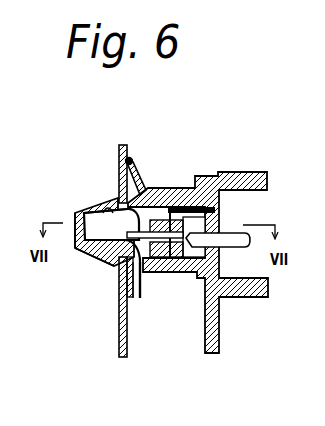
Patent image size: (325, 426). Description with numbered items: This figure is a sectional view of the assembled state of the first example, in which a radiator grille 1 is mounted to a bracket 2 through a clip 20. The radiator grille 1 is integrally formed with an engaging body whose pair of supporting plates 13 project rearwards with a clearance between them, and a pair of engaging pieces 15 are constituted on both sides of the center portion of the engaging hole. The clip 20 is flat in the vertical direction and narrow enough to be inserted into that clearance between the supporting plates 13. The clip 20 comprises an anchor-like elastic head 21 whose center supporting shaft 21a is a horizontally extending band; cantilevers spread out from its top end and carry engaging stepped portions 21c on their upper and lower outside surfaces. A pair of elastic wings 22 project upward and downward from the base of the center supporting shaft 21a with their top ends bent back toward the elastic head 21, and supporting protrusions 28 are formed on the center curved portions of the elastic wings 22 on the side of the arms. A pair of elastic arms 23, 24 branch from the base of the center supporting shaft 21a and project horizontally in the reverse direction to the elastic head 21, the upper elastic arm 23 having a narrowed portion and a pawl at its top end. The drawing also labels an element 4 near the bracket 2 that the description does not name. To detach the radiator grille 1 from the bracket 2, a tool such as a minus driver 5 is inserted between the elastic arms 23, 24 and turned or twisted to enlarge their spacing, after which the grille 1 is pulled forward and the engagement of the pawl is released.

The radiator grille 1 is at (238, 178).
The bracket 2 is at (118, 352).
The cable 4 is at (104, 272).
The minus driver 5 is at (231, 245).
The supporting plates 13 is at (103, 243).
The engaging pieces 15 is at (160, 272).
The clip 20 is at (80, 258).
The elastic head 21 is at (82, 213).
The center supporting shaft 21a is at (86, 214).
The engaging stepped portions 21c is at (108, 210).
The elastic wings 22 is at (131, 161).
The upper elastic arm 23 is at (183, 200).
The elastic arm 24 is at (180, 240).
The supporting protrusions 28 is at (141, 290).